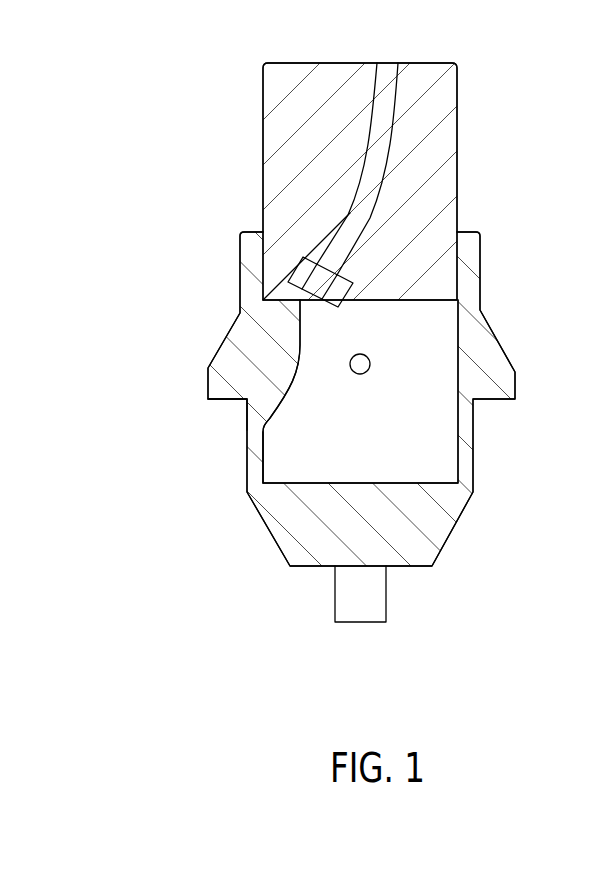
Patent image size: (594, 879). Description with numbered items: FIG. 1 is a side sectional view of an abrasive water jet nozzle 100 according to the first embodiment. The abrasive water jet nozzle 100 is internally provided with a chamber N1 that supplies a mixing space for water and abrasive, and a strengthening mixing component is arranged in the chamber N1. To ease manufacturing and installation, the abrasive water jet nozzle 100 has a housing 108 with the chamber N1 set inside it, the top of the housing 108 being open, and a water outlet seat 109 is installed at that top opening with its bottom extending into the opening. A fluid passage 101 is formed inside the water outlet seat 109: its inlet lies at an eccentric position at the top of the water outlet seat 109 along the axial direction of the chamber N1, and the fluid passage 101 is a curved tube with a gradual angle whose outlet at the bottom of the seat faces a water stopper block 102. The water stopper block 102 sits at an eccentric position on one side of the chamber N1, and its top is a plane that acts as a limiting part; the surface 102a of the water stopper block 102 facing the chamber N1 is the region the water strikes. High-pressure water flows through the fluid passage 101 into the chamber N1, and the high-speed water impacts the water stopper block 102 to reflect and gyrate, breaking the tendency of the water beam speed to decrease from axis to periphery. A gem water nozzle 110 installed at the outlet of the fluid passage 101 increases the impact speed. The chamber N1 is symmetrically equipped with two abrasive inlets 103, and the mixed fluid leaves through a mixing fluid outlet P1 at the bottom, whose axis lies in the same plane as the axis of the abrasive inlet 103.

The abrasive water jet nozzle 100 is at (250, 571).
The fluid passage 101 is at (383, 157).
The water stopper block 102 is at (282, 367).
The inner wall surface of nozzle body 102a is at (300, 343).
The abrasive inlet 103 is at (369, 366).
The housing 108 is at (247, 437).
The water outlet seat 109 is at (262, 158).
The gem water nozzle 110 is at (307, 272).
The chamber N1 is at (432, 453).
The mixing fluid outlet P1 is at (357, 622).